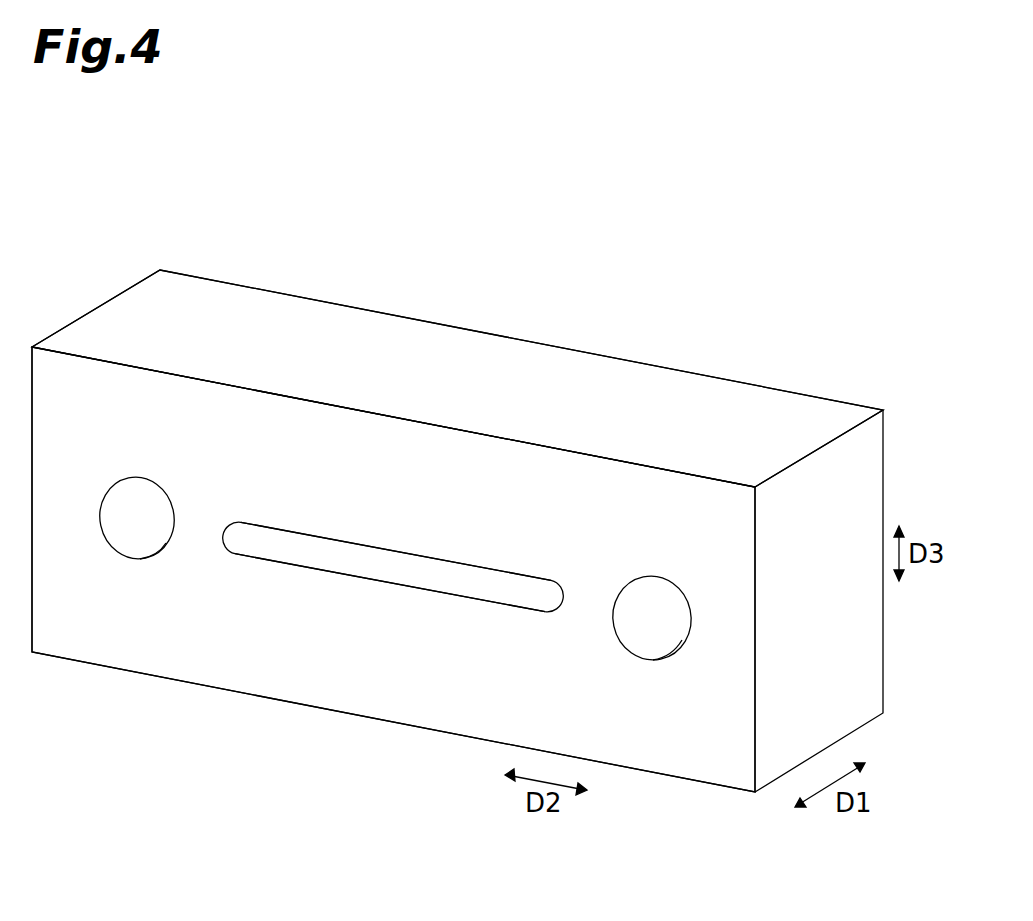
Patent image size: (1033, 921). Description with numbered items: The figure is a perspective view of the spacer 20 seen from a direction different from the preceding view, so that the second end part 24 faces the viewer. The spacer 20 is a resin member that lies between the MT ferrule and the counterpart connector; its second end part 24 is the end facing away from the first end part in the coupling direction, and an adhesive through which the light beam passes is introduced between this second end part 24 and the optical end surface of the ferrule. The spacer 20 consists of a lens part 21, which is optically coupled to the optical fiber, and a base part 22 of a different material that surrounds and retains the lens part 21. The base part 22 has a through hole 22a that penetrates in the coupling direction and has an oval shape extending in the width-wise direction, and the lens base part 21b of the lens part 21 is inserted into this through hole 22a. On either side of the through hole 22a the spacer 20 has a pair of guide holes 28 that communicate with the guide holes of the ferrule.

The spacer 20 is at (684, 286).
The lens part 21 is at (393, 568).
The lens base part 21b is at (262, 543).
The base part 22 is at (708, 410).
The through hole 22a is at (445, 598).
The second end part 24 is at (347, 685).
The guide holes 28 is at (125, 538).